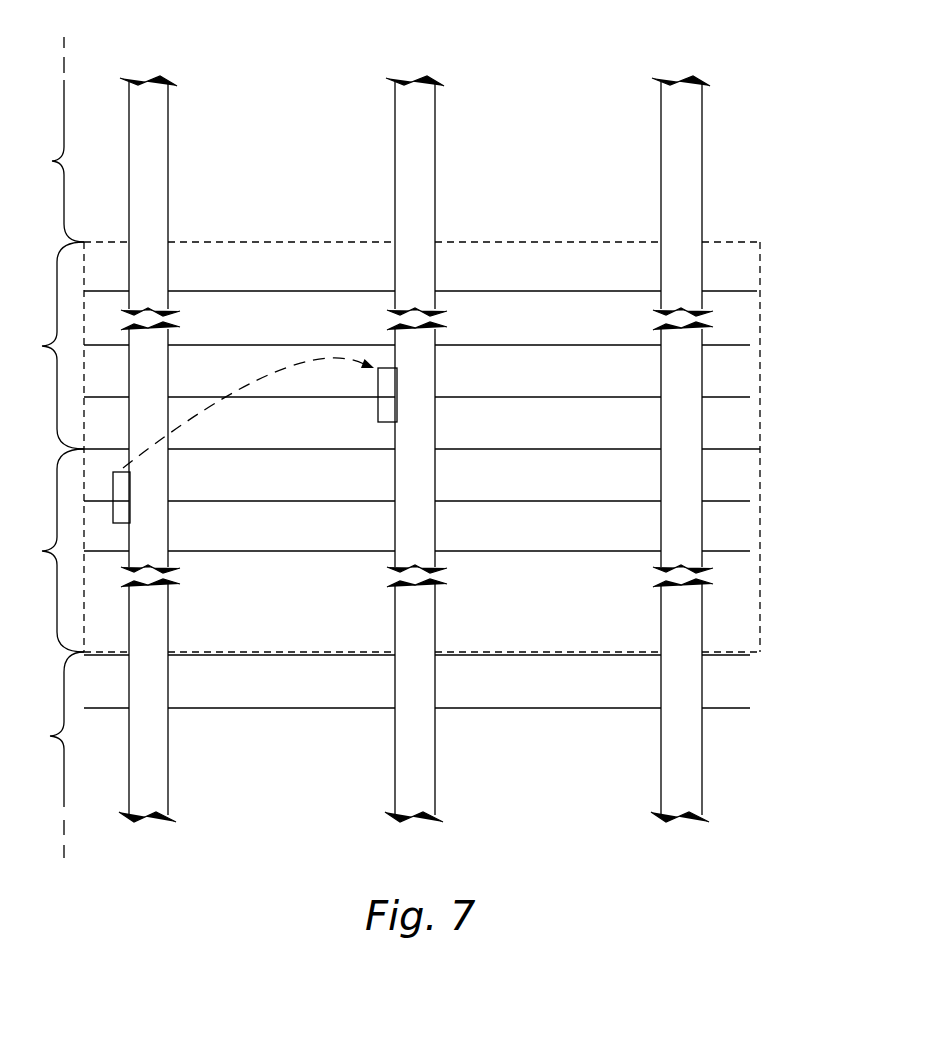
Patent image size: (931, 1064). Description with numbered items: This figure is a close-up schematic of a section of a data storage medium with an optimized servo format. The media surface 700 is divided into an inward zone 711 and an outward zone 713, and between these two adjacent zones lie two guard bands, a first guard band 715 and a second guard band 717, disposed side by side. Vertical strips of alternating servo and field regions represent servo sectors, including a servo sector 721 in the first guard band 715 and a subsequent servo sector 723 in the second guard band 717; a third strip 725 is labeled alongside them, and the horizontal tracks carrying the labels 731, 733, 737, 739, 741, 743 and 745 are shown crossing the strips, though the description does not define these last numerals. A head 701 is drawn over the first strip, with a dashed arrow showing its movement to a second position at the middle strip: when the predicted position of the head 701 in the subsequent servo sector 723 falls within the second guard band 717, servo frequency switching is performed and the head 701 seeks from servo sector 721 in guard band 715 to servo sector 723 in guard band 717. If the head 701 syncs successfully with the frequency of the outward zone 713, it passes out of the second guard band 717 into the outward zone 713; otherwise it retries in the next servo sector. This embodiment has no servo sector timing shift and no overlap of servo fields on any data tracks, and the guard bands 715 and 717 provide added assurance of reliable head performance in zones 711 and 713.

The media surface 700 is at (682, 45).
The head 701 is at (113, 511).
The inward zone 711 is at (50, 755).
The outward zone 713 is at (48, 139).
The guard band 715 is at (45, 550).
The second guard band 717 is at (45, 345).
The servo sector 721 is at (205, 828).
The servo sector 723 is at (472, 828).
The third track column 725 is at (737, 828).
The track 731 is at (754, 708).
The track 733 is at (754, 657).
The track 737 is at (754, 551).
The track 739 is at (754, 502).
The track 741 is at (762, 449).
The track 743 is at (754, 398).
The track 745 is at (754, 345).